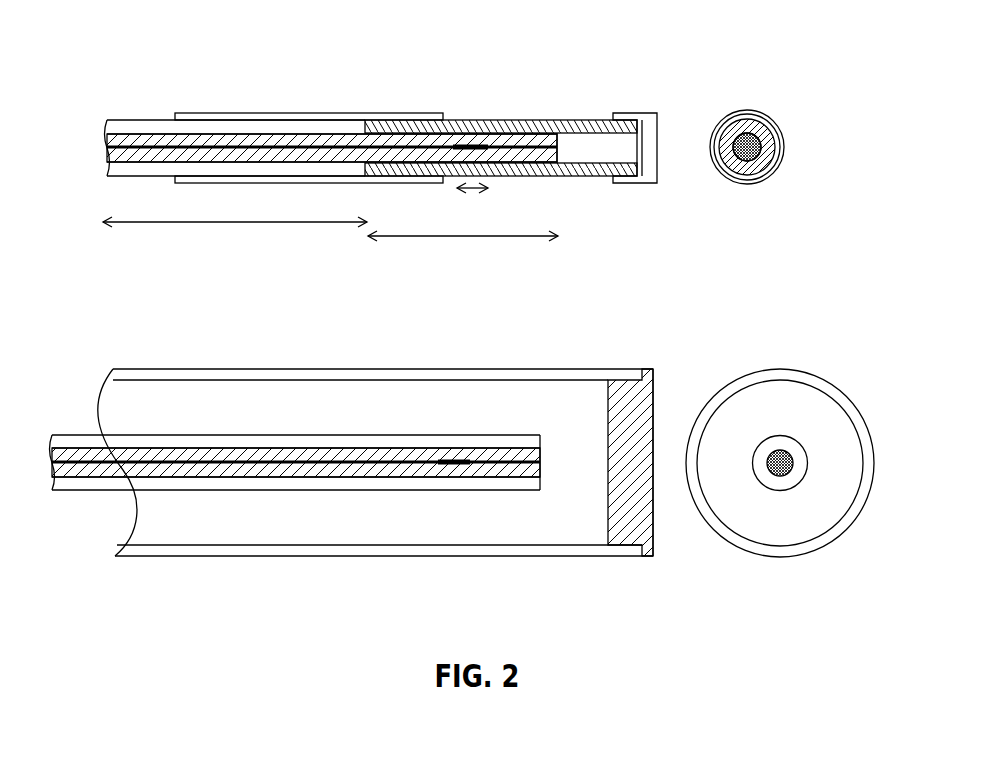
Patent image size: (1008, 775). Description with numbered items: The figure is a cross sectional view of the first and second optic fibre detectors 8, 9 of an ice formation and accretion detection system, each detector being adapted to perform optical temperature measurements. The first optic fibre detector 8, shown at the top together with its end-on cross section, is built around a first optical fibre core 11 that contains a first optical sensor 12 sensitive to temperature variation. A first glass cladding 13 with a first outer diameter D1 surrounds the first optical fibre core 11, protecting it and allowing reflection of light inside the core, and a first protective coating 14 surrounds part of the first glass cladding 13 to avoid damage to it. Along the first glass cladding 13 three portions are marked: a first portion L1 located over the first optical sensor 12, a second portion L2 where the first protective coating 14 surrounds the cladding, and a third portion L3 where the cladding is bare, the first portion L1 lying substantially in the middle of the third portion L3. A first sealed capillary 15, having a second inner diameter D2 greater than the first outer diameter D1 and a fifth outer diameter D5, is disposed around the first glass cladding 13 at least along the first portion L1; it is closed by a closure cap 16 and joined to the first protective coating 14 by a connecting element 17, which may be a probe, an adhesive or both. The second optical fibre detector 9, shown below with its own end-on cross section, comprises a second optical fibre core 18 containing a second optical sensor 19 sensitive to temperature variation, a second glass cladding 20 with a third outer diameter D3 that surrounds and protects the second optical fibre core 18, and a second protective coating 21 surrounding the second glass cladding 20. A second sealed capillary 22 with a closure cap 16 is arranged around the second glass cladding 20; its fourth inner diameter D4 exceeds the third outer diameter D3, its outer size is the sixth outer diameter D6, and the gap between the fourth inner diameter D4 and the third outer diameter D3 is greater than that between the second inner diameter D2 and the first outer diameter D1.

The first optic fibre detector 8 is at (239, 94).
The second optic fibre detector 9 is at (158, 354).
The first optical fibre core 11 is at (143, 147).
The first optical sensor 12 is at (471, 146).
The first glass cladding 13 is at (178, 140).
The first protective coating 14 is at (212, 127).
The first sealed capillary 15 is at (382, 128).
The closure cap 16 is at (647, 177).
The connecting element 17 is at (300, 112).
The second optical fibre core 18 is at (75, 452).
The second optical sensor 19 is at (451, 462).
The second glass cladding 20 is at (102, 468).
The second protective coating 21 is at (157, 480).
The second sealed capillary 22 is at (245, 375).
The first outer diameter D1 is at (530, 127).
The second inner diameter D2 is at (583, 127).
The third outer diameter D3 is at (265, 446).
The fourth inner diameter D4 is at (360, 377).
The fifth outer diameter D5 is at (449, 119).
The sixth outer diameter D6 is at (498, 364).
The first portion L1 is at (472, 207).
The second portion L2 is at (235, 205).
The third portion L3 is at (463, 251).